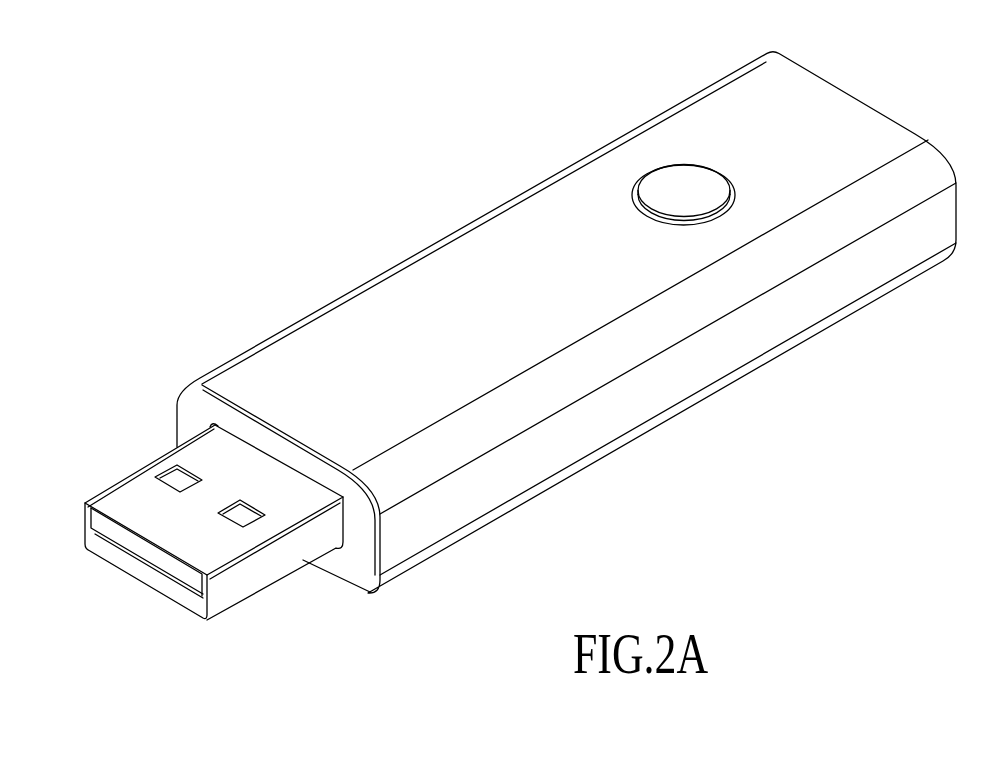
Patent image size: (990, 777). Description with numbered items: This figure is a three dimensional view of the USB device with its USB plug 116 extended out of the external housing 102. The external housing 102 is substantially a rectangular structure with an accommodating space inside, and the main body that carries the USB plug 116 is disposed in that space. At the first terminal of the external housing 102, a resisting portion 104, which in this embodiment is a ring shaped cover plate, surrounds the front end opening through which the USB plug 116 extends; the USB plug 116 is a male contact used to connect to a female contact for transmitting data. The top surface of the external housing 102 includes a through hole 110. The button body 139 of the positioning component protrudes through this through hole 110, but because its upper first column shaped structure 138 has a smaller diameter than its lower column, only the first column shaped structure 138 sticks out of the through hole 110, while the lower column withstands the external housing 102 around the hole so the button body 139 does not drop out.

The external housing 102 is at (538, 223).
The resisting portion 104 is at (342, 563).
The through hole 110 is at (637, 190).
The USB plug 116 is at (135, 497).
The first column shaped structure 138 is at (672, 183).
The button body 139 is at (695, 56).